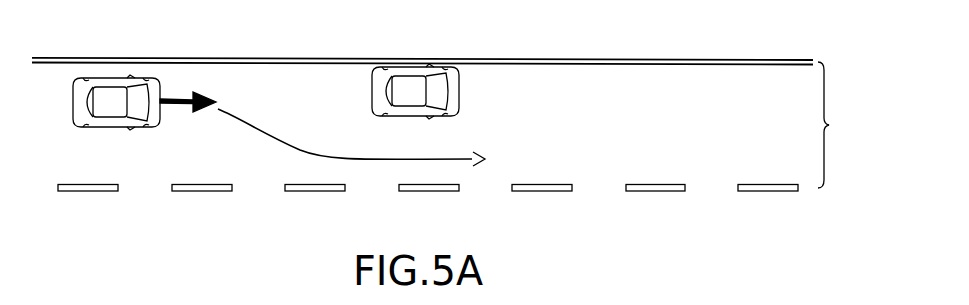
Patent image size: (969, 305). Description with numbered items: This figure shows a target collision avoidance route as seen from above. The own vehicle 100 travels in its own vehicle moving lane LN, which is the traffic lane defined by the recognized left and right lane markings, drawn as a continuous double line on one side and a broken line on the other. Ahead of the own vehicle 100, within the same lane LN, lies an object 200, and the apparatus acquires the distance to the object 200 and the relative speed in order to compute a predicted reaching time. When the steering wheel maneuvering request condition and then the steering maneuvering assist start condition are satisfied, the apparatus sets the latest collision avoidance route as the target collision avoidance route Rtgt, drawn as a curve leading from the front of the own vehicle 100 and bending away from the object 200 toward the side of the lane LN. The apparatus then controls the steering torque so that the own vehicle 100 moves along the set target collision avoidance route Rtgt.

The own vehicle 100 is at (117, 80).
The object 200 is at (416, 66).
The target collision avoidance route Rtgt is at (298, 148).
The own vehicle moving lane LN is at (843, 125).